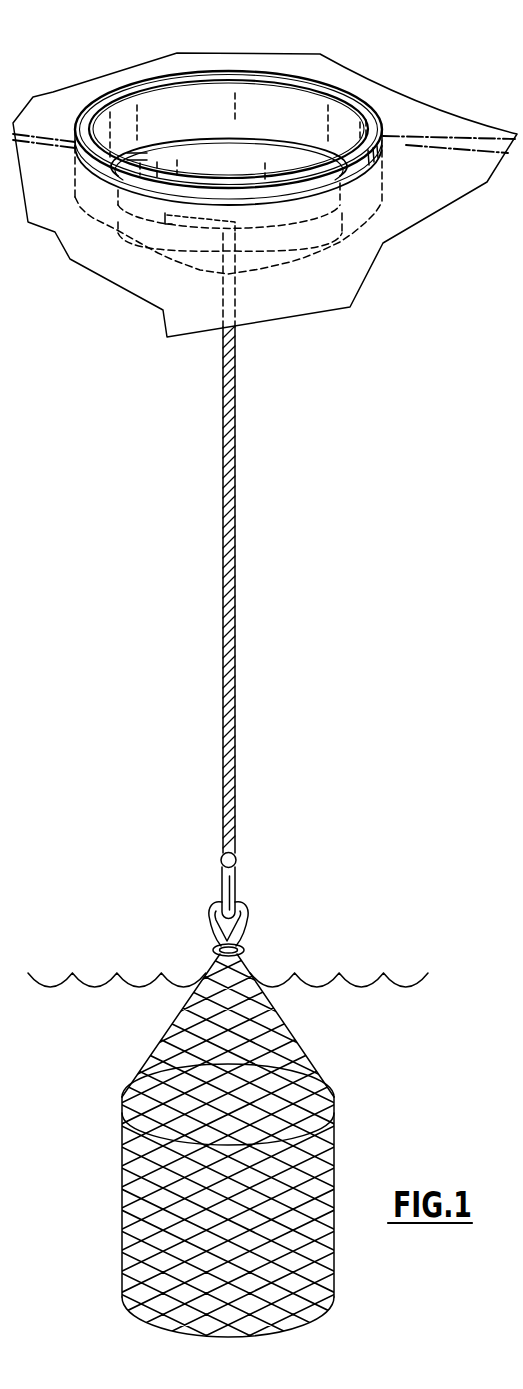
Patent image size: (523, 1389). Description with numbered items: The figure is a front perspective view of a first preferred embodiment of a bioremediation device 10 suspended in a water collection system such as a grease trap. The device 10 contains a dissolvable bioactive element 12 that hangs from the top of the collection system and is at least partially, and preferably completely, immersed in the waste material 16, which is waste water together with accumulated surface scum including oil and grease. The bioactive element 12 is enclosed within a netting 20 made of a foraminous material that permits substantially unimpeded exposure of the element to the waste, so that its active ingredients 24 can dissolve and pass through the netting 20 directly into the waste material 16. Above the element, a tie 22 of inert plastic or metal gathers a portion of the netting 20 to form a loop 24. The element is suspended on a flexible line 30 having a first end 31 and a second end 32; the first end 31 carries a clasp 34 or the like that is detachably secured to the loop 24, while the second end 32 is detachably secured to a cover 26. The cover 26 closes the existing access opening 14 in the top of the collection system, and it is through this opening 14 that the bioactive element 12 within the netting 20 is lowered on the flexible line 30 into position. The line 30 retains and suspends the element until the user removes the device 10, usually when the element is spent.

The bioremediation device 10 is at (367, 56).
The cover 26 is at (366, 114).
The opening 14 is at (183, 168).
The second end 32 is at (205, 228).
The flexible line 30 is at (236, 477).
The first end 31 is at (221, 861).
The clasp 34 is at (236, 883).
The loop 24 is at (205, 901).
The tie 22 is at (247, 946).
The netting 20 is at (175, 1018).
The waste material 16 is at (105, 1230).
The dissolvable bioactive element 12 is at (295, 1280).